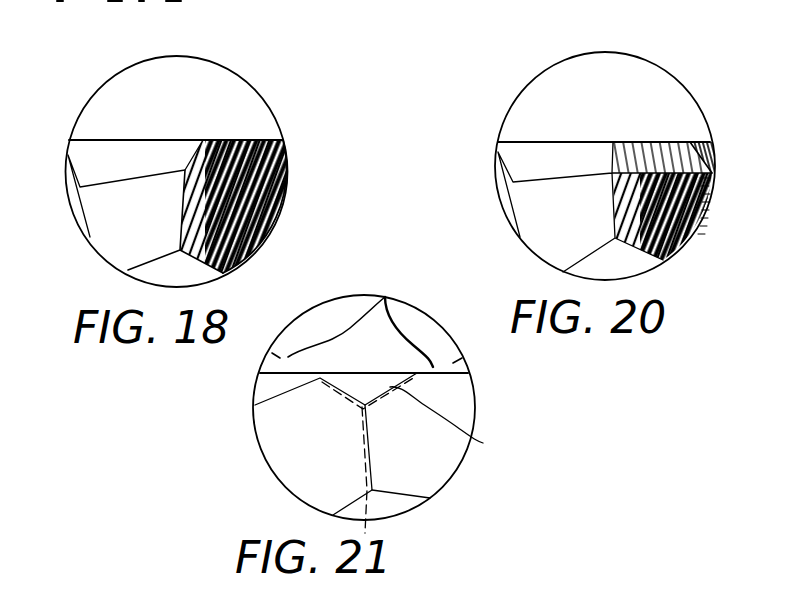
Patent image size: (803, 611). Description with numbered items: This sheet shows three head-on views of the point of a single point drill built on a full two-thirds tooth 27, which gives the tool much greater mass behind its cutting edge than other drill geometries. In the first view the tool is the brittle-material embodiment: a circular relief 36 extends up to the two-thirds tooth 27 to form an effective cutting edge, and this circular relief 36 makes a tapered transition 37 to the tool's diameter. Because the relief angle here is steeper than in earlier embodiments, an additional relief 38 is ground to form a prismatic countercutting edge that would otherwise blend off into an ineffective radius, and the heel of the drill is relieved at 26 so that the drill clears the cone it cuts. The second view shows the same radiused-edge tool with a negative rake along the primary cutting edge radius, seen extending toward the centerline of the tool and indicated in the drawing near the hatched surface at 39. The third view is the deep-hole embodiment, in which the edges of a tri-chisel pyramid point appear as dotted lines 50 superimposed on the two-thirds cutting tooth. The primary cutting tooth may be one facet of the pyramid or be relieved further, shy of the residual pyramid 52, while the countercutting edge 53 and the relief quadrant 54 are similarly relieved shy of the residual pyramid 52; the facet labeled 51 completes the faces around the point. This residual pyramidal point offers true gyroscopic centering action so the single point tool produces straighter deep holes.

In FIG. 18, the heel relief 26 is at (157, 272).
In FIG. 18, the two-thirds tooth 27 is at (260, 137).
In FIG. 18, the circular relief 36 is at (275, 227).
In FIG. 20, the circular relief 36 is at (687, 242).
In FIG. 18, the tapered transition 37 is at (285, 182).
In FIG. 18, the additional relief 38 is at (73, 200).
In FIG. 20, the land 39 is at (665, 157).
In FIG. 21, the dotted lines of tri-chisel pyramid point 50 is at (383, 298).
In FIG. 21, the facet 51 is at (442, 465).
In FIG. 21, the residual pyramid 52 is at (454, 423).
In FIG. 21, the countercutting edge 53 is at (268, 390).
In FIG. 21, the relief quadrant 54 is at (283, 448).